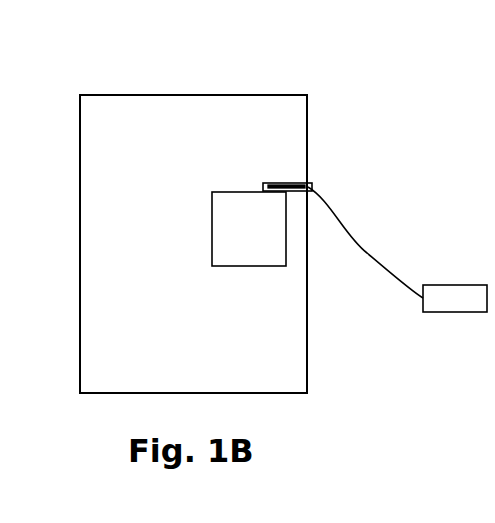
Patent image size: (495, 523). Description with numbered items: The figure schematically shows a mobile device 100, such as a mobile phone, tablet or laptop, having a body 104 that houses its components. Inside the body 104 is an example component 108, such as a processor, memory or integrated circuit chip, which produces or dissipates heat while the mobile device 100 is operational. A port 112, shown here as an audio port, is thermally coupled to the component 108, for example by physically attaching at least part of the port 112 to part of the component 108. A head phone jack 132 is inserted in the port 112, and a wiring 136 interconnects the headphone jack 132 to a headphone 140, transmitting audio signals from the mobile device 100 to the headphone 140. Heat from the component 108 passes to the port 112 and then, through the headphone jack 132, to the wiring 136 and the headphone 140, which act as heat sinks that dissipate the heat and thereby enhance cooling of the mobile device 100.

The mobile device 100 is at (202, 68).
The body 104 is at (258, 95).
The component 108 is at (249, 229).
The port 112 is at (270, 183).
The head phone jack 132 is at (305, 185).
The wiring 136 is at (365, 252).
The headphone 140 is at (455, 298).